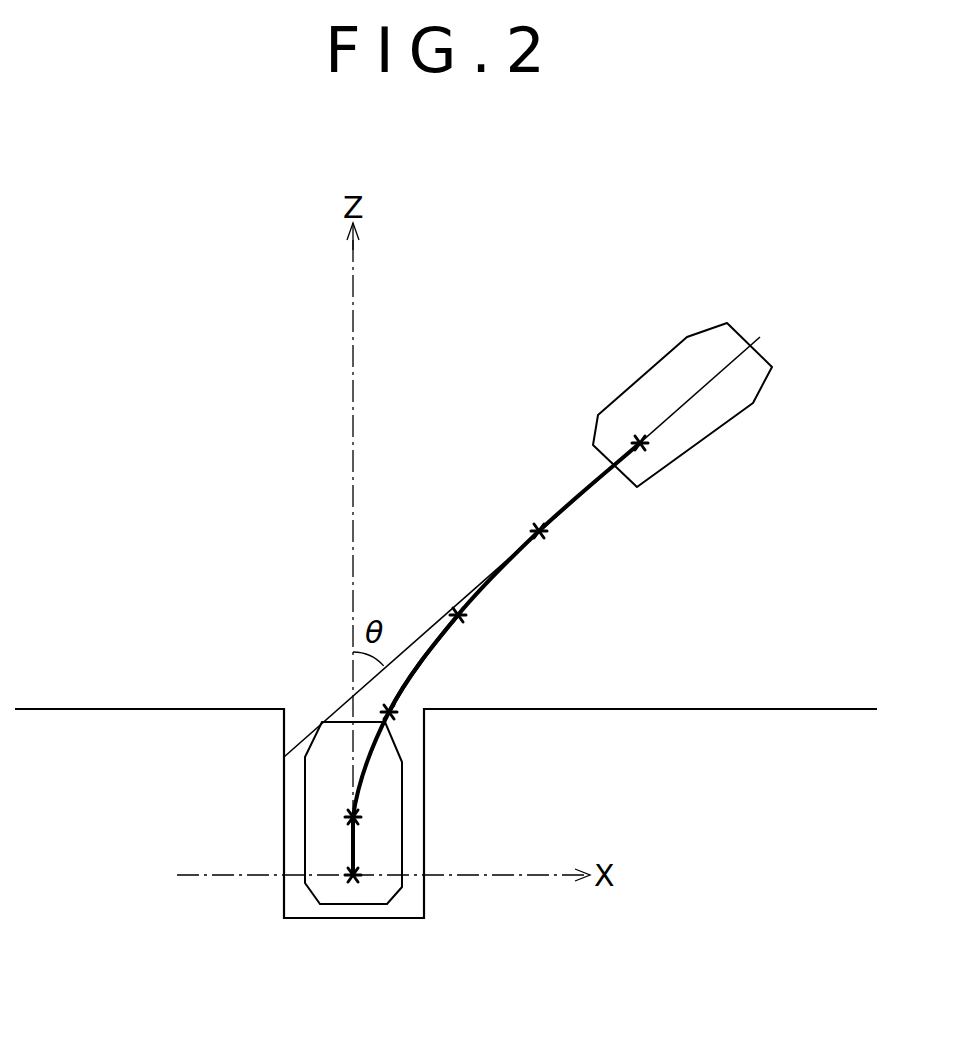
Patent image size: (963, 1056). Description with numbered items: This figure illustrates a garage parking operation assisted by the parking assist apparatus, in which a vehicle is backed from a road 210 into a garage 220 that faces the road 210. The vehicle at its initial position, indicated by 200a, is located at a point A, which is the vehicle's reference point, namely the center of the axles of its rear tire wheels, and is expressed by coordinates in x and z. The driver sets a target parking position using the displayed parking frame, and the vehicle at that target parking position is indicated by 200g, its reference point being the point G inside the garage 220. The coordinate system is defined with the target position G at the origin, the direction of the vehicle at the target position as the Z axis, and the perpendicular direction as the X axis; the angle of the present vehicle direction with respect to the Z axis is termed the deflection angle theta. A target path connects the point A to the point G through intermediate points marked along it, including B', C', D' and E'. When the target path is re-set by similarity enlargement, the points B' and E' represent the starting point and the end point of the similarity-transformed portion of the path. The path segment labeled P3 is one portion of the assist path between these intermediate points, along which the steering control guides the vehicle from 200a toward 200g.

The vehicle at initial position 200a is at (753, 410).
The vehicle at target parking position 200g is at (402, 778).
The road 210 is at (623, 695).
The garage 220 is at (284, 772).
The initial position point A is at (645, 447).
The starting point of similarity-transformed path B' is at (557, 545).
The intermediate point C' is at (471, 630).
The groove entry point D' is at (377, 706).
The end point of similarity-transformed path E' is at (372, 816).
The target position point G is at (358, 872).
The path segment P3 is at (437, 640).